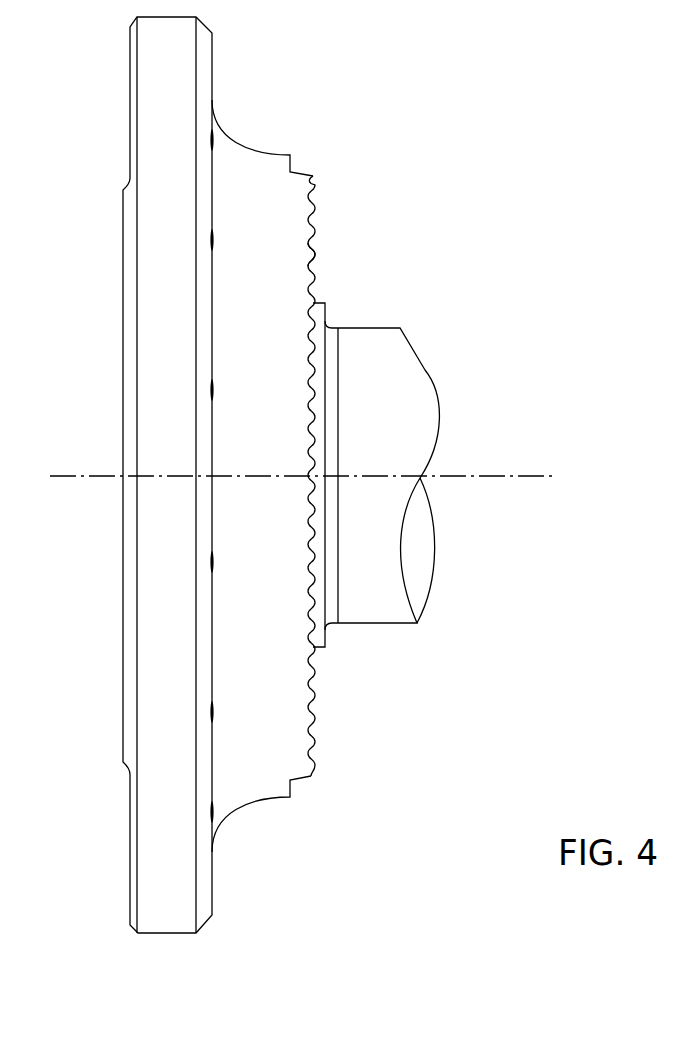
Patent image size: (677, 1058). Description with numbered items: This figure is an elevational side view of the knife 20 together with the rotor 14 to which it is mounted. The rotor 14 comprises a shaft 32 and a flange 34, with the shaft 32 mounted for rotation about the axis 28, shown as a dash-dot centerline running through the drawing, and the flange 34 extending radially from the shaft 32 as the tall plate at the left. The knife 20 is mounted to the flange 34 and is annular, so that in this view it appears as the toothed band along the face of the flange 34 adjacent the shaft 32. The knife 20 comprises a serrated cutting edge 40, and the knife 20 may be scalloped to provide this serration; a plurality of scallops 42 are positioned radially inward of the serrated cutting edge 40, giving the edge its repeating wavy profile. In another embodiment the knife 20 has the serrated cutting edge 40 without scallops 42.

The rotor 14 is at (523, 157).
The knife 20 is at (308, 260).
The axis 28 is at (510, 476).
The shaft 32 is at (383, 378).
The flange 34 is at (168, 47).
The serrated cutting edge 40 is at (316, 204).
The scallops 42 is at (308, 325).